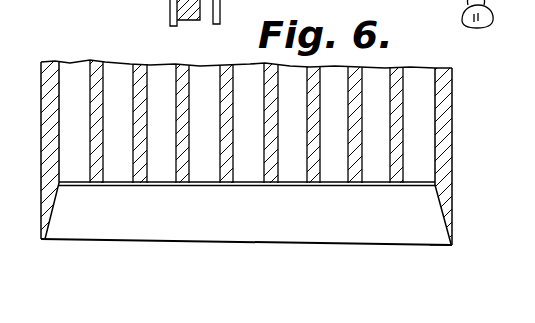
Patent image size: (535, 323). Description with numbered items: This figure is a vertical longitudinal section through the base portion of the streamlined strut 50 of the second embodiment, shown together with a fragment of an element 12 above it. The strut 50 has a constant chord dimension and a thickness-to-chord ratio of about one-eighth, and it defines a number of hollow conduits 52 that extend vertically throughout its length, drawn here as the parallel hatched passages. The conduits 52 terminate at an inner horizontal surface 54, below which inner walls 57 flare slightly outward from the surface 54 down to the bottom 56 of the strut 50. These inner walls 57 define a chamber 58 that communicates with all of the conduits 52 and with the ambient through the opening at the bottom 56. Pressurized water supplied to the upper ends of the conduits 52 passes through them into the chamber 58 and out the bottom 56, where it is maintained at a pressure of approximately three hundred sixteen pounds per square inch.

The heat pipe / tube element 12 is at (170, 25).
The streamlined strut 50 is at (457, 98).
The hollow conduits 52 is at (117, 70).
The inner horizontal surface 54 is at (183, 184).
The bottom 56 is at (428, 246).
The inner walls 57 is at (363, 226).
The chamber 58 is at (263, 228).